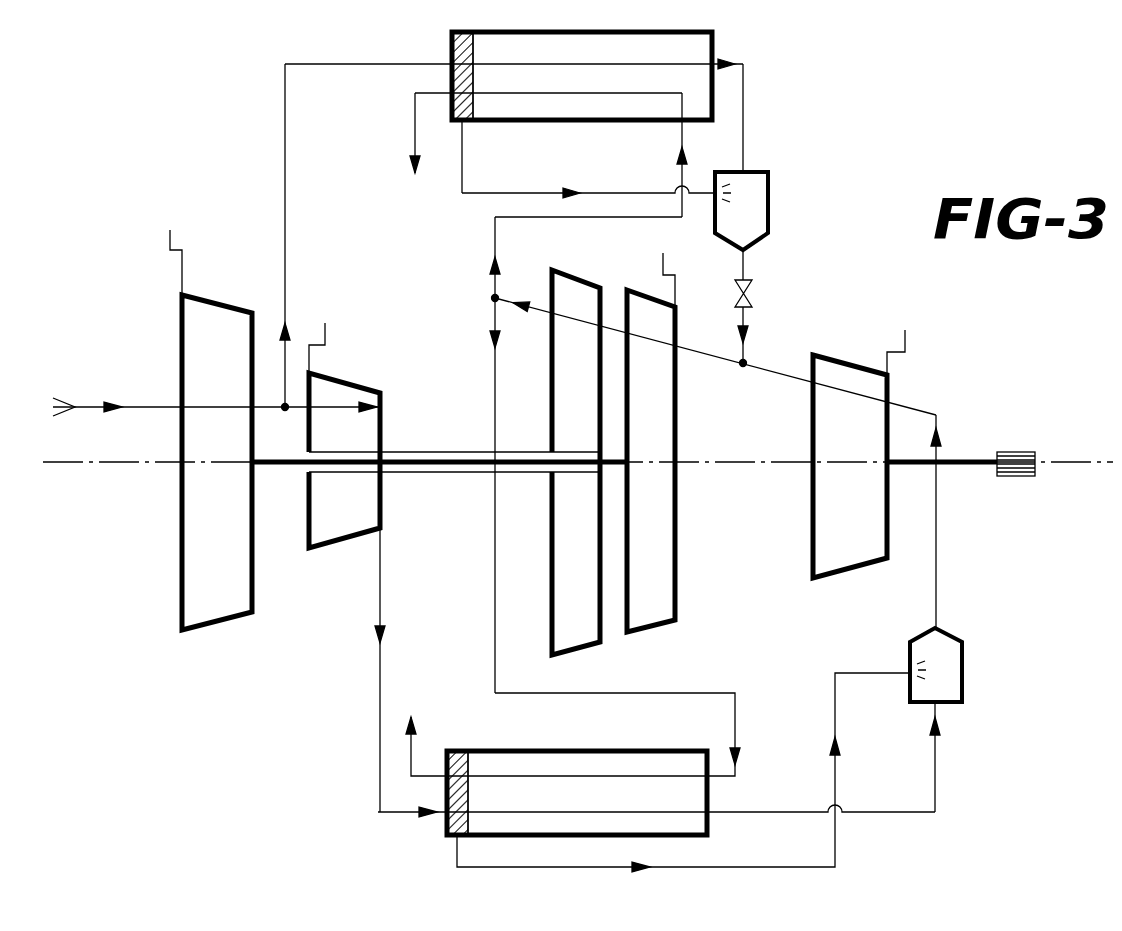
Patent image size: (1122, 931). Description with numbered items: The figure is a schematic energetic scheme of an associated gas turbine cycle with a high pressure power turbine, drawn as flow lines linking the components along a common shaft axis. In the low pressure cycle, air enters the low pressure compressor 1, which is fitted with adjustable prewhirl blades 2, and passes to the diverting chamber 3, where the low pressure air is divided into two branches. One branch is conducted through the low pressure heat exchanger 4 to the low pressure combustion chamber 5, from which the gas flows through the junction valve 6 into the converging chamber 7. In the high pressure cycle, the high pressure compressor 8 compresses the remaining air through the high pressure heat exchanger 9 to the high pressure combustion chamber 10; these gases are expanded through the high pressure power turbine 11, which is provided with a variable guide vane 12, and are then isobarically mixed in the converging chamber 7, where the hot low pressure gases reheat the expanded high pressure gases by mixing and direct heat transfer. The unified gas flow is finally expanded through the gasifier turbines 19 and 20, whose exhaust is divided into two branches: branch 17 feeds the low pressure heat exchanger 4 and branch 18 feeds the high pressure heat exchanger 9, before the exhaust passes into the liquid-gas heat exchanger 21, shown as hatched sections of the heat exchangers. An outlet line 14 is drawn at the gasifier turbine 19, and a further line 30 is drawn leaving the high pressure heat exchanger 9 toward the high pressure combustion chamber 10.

The low pressure compressor 1 is at (178, 590).
The adjustable prewhirl blades 2 is at (177, 269).
The diverting chamber 3 is at (283, 411).
The low pressure heat exchanger 4 is at (578, 108).
The low pressure combustion chamber 5 is at (760, 207).
The junction valve 6 is at (752, 293).
The converging chamber 7 is at (735, 370).
The high pressure compressor 8 is at (322, 537).
The high pressure heat exchanger 9 is at (583, 757).
The high pressure combustion chamber 10 is at (955, 667).
The high pressure power turbine 11 is at (845, 558).
The variable guide vane 12 is at (905, 345).
The turbine outlet 14 is at (670, 267).
The exhaust branch for low pressure heat exchanger 17 is at (493, 238).
The exhaust branch for high pressure heat exchanger 18 is at (675, 692).
The gasifier turbine 19 is at (670, 592).
The gasifier turbine 20 is at (555, 602).
The liquid-gas heat exchanger 21 is at (452, 40).
The conduit 30 is at (778, 865).